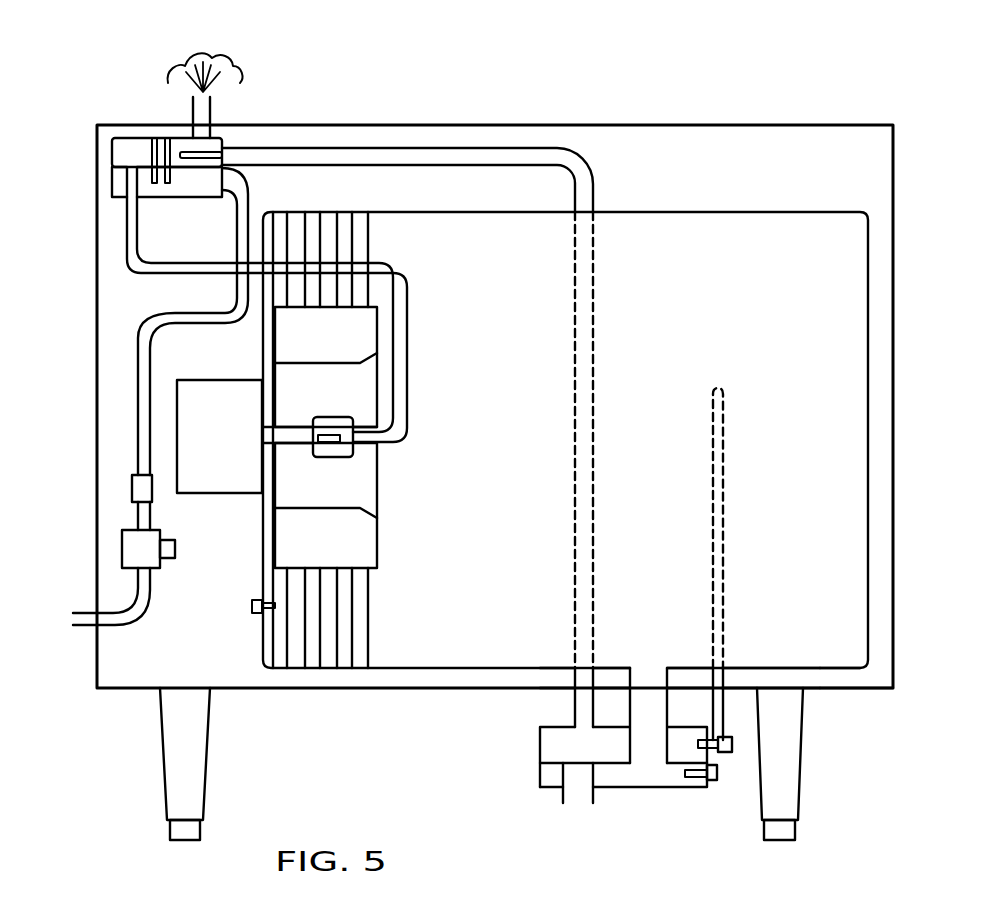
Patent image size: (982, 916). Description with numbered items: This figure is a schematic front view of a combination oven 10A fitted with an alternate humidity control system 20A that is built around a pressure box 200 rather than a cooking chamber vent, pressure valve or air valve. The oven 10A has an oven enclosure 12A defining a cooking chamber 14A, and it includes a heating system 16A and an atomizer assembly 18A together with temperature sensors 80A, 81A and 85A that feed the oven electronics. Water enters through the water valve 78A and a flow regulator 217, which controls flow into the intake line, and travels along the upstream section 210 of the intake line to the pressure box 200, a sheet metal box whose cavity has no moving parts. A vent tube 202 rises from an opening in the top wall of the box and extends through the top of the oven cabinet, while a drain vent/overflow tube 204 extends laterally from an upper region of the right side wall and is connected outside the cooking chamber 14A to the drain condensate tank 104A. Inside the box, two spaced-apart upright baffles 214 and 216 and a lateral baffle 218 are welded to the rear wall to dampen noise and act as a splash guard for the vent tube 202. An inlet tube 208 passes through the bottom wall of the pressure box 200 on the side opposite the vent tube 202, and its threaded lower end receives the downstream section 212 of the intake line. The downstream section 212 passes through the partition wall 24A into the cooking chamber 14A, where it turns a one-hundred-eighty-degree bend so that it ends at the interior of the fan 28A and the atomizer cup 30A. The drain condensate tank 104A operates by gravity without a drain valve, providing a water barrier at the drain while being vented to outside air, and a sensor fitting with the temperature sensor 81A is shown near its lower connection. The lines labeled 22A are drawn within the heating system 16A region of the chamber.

The combination oven 10A is at (540, 123).
The oven enclosure 12A is at (383, 690).
The cooking chamber 14A is at (763, 297).
The heating system 16A is at (334, 440).
The atomizer assembly 18A is at (388, 452).
The humidity control system 20A is at (221, 396).
The tubes 22A is at (290, 658).
The partition wall 24A is at (265, 563).
The fan 28A is at (380, 548).
The atomizer cup 30A is at (342, 458).
The water valve 78A is at (122, 548).
The temperature sensor 80A is at (733, 742).
The temperature sensor 81A is at (717, 781).
The temperature sensor 85A is at (250, 604).
The drain condensate tank 104A is at (540, 774).
The pressure box 200 is at (175, 144).
The vent tube 202 is at (213, 120).
The drain vent/overflow tube 204 is at (435, 170).
The inlet tube 208 is at (112, 187).
The upstream section 210 is at (168, 313).
The downstream section 212 is at (168, 260).
The upright baffle 214 is at (150, 157).
The upright baffle 216 is at (158, 138).
The flow regulator 217 is at (132, 483).
The lateral baffle 218 is at (222, 158).